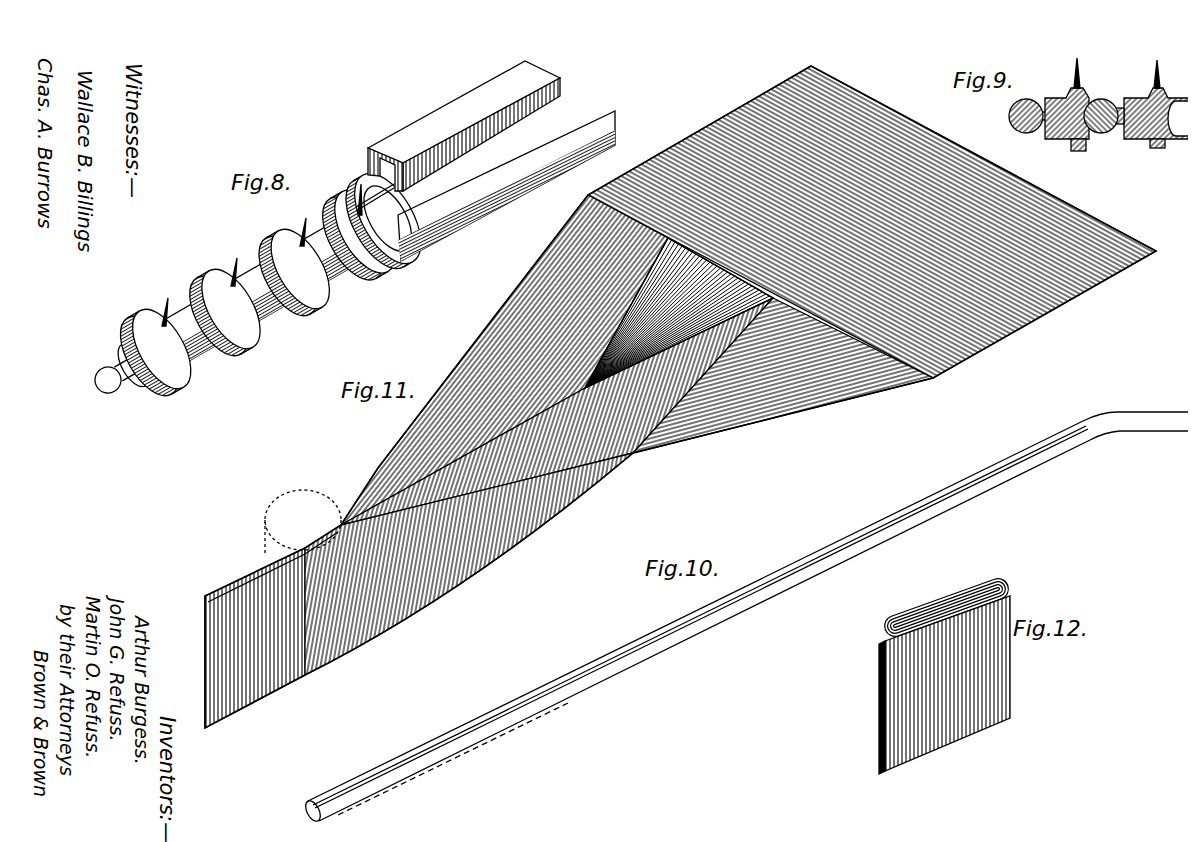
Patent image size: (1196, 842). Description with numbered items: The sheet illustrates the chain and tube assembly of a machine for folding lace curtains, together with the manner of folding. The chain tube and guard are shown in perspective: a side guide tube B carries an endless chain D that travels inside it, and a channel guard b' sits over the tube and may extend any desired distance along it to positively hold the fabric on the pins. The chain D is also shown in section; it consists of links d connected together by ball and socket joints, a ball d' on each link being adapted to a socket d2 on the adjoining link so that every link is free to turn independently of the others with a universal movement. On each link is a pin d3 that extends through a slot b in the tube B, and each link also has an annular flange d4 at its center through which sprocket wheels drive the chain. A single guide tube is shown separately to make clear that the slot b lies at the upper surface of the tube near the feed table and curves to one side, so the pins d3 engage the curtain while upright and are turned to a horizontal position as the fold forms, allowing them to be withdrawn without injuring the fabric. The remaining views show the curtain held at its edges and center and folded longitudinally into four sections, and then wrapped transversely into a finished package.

In FIG. 8, the chain D is at (253, 296).
In FIG. 9, the chain D is at (1114, 121).
In FIG. 8, the slot b is at (367, 190).
In FIG. 10, the slot b is at (700, 609).
In FIG. 8, the channel guard b' is at (464, 126).
In FIG. 8, the side guide tube B is at (422, 190).
In FIG. 10, the side guide tube B is at (745, 618).
In FIG. 9, the ball d' is at (1011, 116).
In FIG. 9, the link d is at (1114, 128).
In FIG. 9, the socket d2 is at (1098, 125).
In FIG. 9, the pin d3 is at (1066, 76).
In FIG. 9, the annular flange d4 is at (1070, 143).